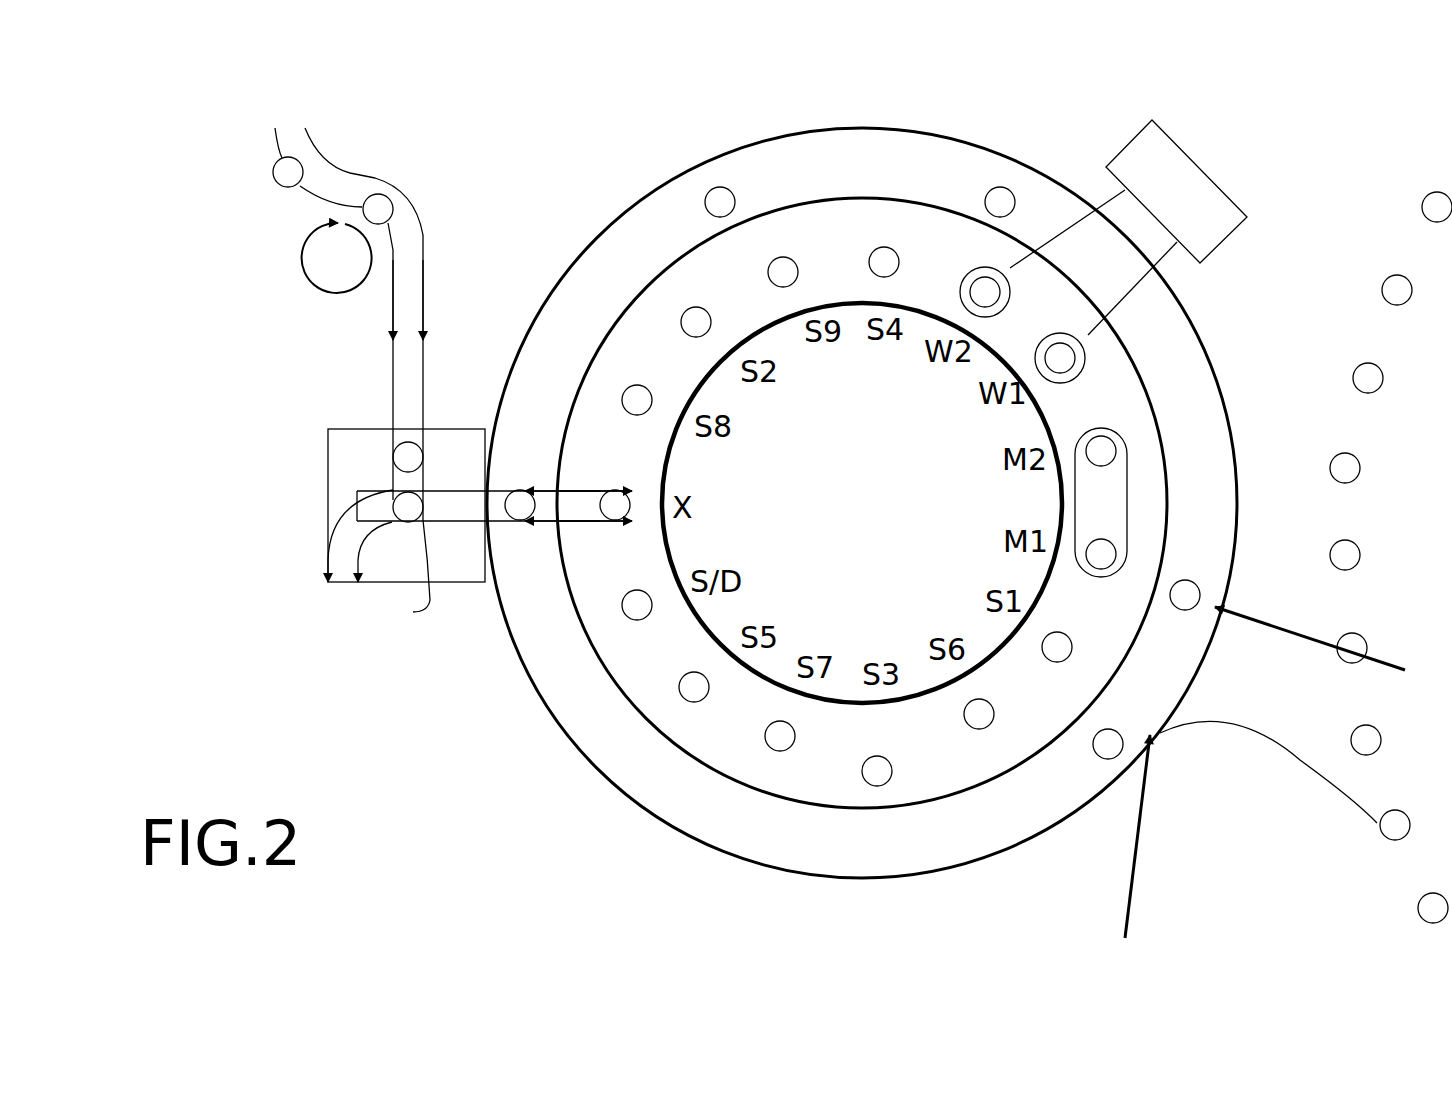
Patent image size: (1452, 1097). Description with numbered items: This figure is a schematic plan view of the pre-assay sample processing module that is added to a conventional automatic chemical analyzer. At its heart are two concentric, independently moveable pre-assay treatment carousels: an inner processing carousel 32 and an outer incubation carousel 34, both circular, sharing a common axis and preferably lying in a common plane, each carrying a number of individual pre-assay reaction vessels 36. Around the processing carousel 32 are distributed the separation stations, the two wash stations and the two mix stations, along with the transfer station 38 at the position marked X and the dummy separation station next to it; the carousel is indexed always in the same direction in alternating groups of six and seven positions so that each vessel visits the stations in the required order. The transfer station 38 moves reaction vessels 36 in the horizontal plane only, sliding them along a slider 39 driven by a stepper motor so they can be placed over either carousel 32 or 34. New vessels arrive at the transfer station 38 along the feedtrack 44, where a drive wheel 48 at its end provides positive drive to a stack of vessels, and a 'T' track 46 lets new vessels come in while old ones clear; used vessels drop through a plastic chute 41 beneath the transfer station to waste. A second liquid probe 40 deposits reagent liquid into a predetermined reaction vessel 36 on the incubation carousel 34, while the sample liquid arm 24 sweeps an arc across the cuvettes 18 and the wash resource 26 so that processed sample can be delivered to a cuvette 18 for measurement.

The cuvettes 18 is at (1350, 470).
The sample liquid arm 24 is at (1138, 828).
The wash resource 26 is at (1200, 162).
The processing carousel 32 is at (840, 230).
The incubation carousel 34 is at (645, 255).
The pre-assay reaction vessels 36 is at (720, 200).
The transfer station 38 is at (363, 429).
The slider 39 is at (590, 522).
The second liquid probe 40 is at (1257, 618).
The plastic chute 41 is at (358, 547).
The feedtrack 44 is at (415, 235).
The 'T' track 46 is at (413, 612).
The drive wheel 48 is at (342, 272).